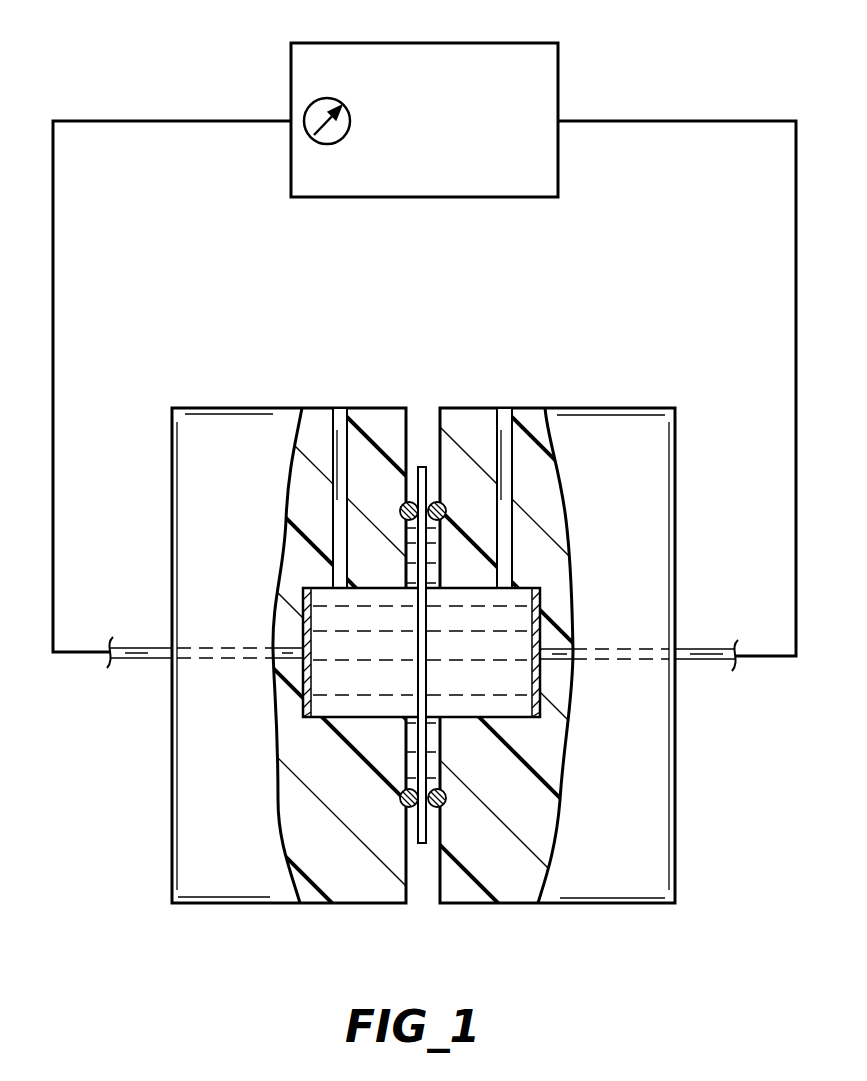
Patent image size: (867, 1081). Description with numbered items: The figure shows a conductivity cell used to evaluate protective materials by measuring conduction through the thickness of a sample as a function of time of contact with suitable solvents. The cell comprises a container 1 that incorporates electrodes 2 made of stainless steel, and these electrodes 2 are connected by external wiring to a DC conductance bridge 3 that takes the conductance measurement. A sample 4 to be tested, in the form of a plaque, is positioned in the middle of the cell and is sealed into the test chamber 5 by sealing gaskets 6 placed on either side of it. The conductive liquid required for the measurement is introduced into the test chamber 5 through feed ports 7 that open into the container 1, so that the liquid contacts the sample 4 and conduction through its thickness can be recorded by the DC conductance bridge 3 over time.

The container 1 is at (336, 881).
The electrodes 2 is at (300, 623).
The DC conductance bridge 3 is at (441, 170).
The sample 4 is at (430, 620).
The test chamber 5 is at (372, 711).
The sealing gaskets 6 is at (432, 478).
The feed ports 7 is at (341, 413).